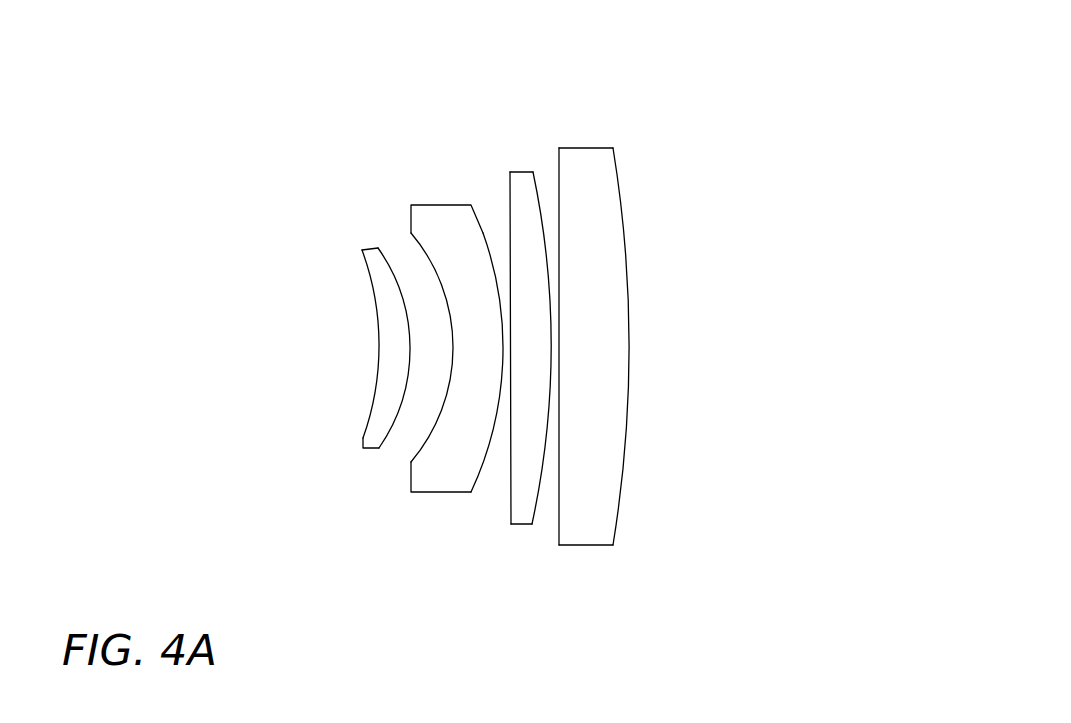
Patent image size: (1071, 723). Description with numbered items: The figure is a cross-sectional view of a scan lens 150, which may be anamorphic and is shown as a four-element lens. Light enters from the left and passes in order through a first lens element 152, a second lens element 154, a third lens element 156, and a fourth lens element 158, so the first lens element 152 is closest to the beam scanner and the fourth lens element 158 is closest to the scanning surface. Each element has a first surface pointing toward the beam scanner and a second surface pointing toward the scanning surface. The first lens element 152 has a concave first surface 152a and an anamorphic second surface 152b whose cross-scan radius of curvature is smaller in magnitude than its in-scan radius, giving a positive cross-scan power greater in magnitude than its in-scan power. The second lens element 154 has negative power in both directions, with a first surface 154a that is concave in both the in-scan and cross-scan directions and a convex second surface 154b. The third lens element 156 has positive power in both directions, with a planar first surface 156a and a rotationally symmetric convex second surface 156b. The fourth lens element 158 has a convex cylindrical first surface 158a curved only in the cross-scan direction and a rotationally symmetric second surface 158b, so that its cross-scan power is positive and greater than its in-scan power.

The scan lens 150 is at (748, 58).
The first lens element 152 is at (370, 250).
The first surface of the first lens element 152a is at (372, 408).
The second surface of the first lens element 152b is at (396, 275).
The second lens element 154 is at (442, 207).
The first surface of the second lens element 154a is at (423, 438).
The second surface of the second lens element 154b is at (482, 232).
The third lens element 156 is at (520, 175).
The first surface of the third lens element 156a is at (510, 503).
The second surface of the third lens element 156b is at (537, 197).
The fourth lens element 158 is at (586, 150).
The first surface of the fourth lens element 158a is at (557, 527).
The second surface of the fourth lens element 158b is at (628, 347).